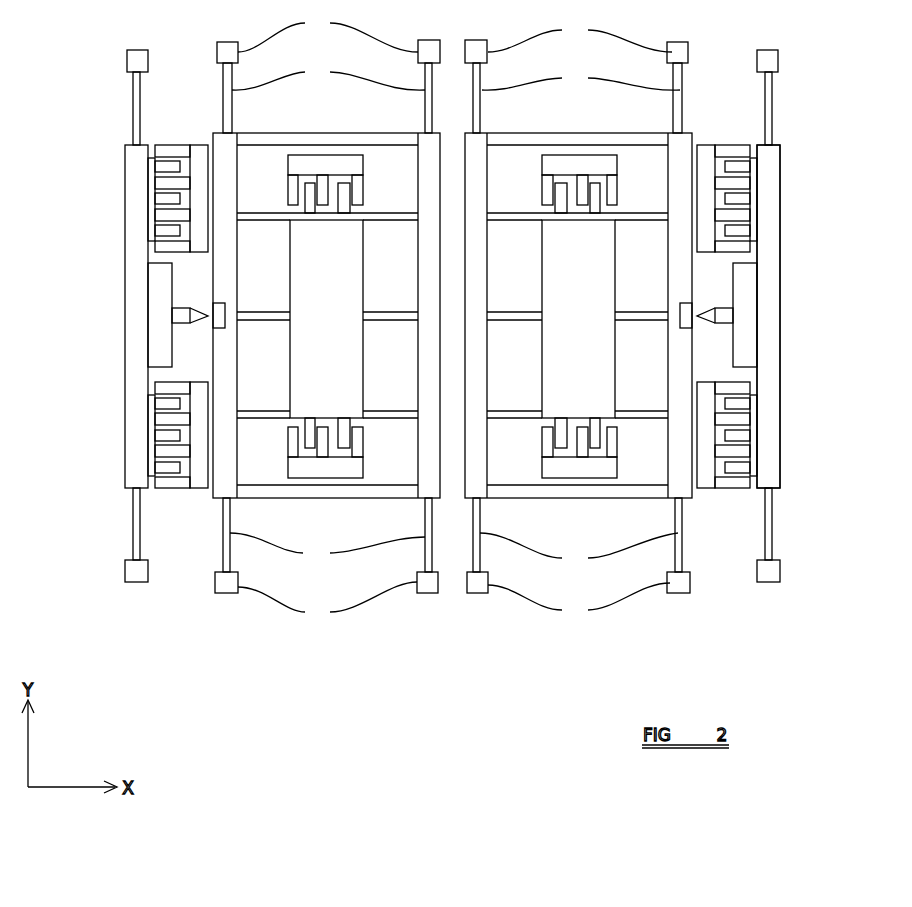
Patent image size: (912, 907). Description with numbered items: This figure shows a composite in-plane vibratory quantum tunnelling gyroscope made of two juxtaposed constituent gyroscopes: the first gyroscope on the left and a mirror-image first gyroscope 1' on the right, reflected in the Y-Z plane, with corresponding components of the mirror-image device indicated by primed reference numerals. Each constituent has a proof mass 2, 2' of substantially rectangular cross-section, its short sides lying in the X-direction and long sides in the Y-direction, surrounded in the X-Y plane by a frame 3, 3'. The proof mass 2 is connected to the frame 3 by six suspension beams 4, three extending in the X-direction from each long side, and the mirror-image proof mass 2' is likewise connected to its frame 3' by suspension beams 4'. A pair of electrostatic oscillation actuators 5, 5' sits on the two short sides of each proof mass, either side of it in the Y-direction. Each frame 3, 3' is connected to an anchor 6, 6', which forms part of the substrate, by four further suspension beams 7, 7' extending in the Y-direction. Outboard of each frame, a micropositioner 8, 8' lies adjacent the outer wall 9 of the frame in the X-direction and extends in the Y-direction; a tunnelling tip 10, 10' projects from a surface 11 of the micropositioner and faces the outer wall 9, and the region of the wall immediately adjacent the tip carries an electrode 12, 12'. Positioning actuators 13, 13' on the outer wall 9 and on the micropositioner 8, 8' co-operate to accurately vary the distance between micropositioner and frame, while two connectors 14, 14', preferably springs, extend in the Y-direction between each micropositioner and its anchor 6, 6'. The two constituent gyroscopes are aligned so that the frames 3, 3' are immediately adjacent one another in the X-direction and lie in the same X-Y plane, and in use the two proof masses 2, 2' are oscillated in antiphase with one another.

The mirror-image first gyroscope 1' is at (800, 316).
The proof mass 2 is at (317, 319).
The proof mass 2' is at (556, 319).
The frame 3 is at (409, 315).
The frame 3' is at (578, 315).
The suspension beams 4 is at (327, 315).
The suspension beams 4' is at (577, 315).
The electrostatic oscillation actuators 5 is at (325, 318).
The electrostatic oscillation actuators 5' is at (579, 343).
The anchor 6 is at (282, 319).
The anchor 6' is at (654, 317).
The further suspension beams 7 is at (327, 317).
The further suspension beams 7' is at (577, 317).
The micropositioner 8 is at (119, 316).
The micropositioner 8' is at (785, 316).
The outer wall 9 is at (213, 372).
The tunnelling tip 10 is at (191, 329).
The tunnelling tip 10' is at (715, 287).
The surface 11 is at (172, 278).
The electrode 12 is at (208, 305).
The electrode 12' is at (707, 335).
The positioning actuators 13 is at (148, 316).
The positioning actuators 13' is at (764, 316).
The connectors 14 is at (113, 305).
The connectors 14' is at (802, 316).